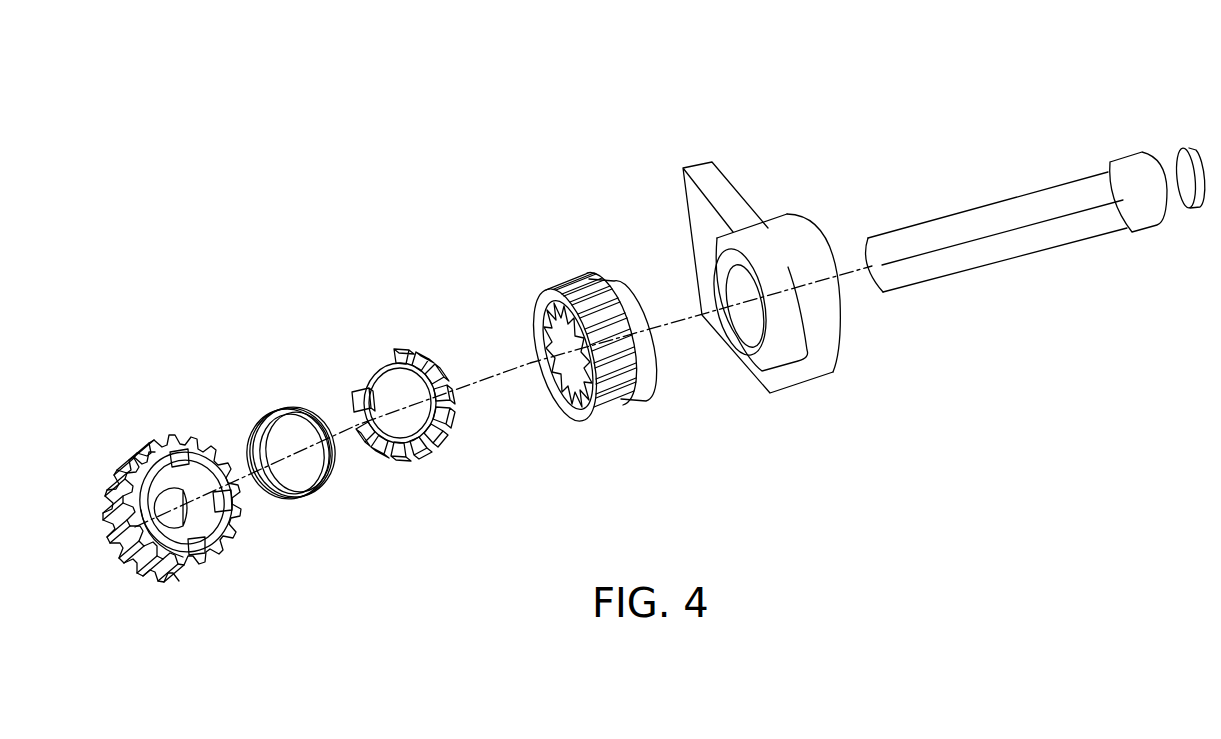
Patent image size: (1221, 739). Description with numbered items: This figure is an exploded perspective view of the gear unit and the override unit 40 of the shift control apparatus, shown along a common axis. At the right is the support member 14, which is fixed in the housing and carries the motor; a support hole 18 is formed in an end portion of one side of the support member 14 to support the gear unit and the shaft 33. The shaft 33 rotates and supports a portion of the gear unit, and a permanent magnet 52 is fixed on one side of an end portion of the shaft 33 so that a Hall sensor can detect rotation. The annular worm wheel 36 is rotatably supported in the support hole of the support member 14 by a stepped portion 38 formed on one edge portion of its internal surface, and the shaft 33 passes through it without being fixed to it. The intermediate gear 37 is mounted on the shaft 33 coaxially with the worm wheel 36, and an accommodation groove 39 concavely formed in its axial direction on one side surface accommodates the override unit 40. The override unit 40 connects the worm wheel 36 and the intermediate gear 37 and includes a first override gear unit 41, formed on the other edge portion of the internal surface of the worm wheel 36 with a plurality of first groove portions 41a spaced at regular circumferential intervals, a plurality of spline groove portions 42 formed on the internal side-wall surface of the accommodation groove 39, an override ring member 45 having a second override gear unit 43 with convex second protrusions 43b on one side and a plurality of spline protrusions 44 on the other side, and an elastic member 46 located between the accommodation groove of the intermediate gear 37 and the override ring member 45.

The support member 14 is at (742, 255).
The support hole 18 is at (733, 298).
The shaft 33 is at (977, 228).
The worm wheel 36 is at (578, 331).
The intermediate gear 37 is at (188, 500).
The stepped portion 38 is at (640, 390).
The accommodation groove 39 is at (140, 458).
The override unit 40 is at (335, 229).
The first override gear unit 41 is at (538, 361).
The first groove portions 41a is at (546, 357).
The spline groove portions 42 is at (176, 448).
The second override gear unit 43 is at (420, 383).
The second protrusions 43b is at (430, 368).
The spline protrusions 44 is at (341, 360).
The override ring member 45 is at (396, 365).
The elastic member 46 is at (318, 497).
The permanent magnet 52 is at (1181, 148).